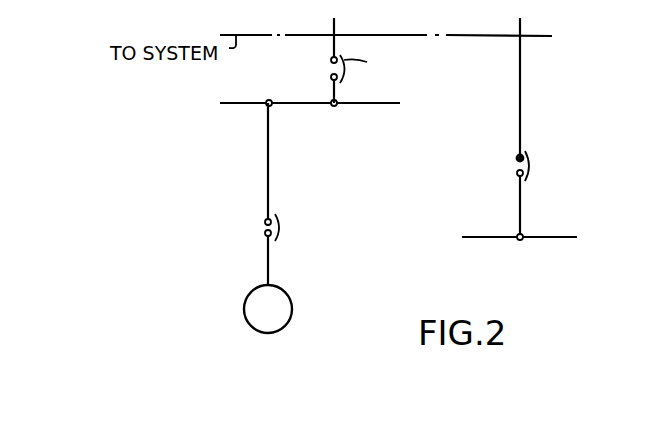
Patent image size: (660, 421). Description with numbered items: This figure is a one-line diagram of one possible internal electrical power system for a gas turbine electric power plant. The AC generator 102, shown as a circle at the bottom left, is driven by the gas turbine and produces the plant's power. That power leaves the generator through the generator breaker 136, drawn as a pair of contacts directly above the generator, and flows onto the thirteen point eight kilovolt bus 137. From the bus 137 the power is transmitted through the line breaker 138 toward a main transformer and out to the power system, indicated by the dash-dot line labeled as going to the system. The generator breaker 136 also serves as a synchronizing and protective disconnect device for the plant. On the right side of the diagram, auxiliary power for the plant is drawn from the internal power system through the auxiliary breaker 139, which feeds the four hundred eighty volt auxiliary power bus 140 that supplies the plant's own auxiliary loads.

The AC generator 102 is at (245, 308).
The generator breaker 136 is at (270, 215).
The 13.8 KV bus 137 is at (370, 104).
The line breaker 138 is at (330, 73).
The auxiliary breaker 139 is at (522, 153).
The auxiliary power 480 volt bus 140 is at (557, 238).